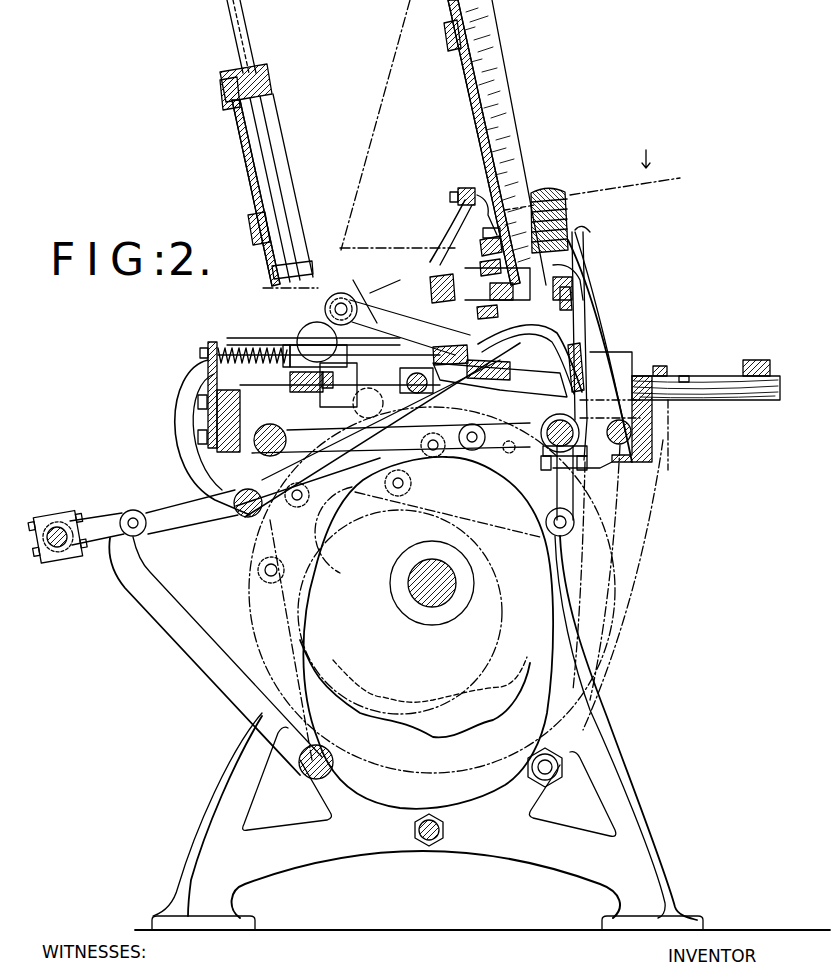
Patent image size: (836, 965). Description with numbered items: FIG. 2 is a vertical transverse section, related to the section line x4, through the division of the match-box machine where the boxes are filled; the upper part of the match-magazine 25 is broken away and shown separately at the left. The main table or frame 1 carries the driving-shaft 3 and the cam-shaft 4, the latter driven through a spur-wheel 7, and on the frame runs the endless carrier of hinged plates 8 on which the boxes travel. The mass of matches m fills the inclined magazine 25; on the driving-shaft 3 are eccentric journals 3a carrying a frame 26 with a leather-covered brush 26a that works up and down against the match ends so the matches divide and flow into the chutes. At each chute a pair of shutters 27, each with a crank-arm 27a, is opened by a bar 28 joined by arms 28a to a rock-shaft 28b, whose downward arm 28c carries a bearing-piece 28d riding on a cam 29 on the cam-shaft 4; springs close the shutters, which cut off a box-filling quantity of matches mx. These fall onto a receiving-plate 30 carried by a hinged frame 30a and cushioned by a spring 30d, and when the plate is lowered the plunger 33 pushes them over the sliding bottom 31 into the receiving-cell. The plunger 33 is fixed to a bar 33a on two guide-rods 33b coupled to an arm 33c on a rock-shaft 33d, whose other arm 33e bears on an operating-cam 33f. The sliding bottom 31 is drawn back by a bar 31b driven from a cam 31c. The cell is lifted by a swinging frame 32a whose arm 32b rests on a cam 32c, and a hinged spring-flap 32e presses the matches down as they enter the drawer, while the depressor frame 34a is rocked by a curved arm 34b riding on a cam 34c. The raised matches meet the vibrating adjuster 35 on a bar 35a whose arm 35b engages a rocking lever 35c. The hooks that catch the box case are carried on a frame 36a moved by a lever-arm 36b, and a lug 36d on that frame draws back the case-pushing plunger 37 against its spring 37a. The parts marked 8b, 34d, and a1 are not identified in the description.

The main frame 1 is at (188, 418).
The driving-shaft 3 is at (592, 470).
The eccentrically-turned journals 3a is at (655, 426).
The cam-shaft 4 is at (456, 567).
The spur-wheel 7 is at (606, 666).
The carrier plates 8 is at (722, 375).
The table stop 8b is at (684, 382).
The match-magazine 25 is at (248, 176).
The brush frame 26 is at (612, 320).
The leather-covered brush 26a is at (575, 215).
The shutters 27 is at (583, 262).
The crank-arm 27a is at (490, 258).
The shutter-opening bar 28 is at (488, 250).
The arms 28a is at (618, 342).
The rock-shaft 28b is at (655, 455).
The downward arm 28c is at (592, 606).
The bearing-piece 28d is at (545, 748).
The shutter cam 29 is at (438, 700).
The receiving-plate 30 is at (585, 278).
The receiving-plate frame 30a is at (590, 290).
The spring 30d is at (562, 300).
The sliding bottom plate 31 is at (548, 460).
The bar 31b is at (490, 393).
The cam 31c is at (548, 532).
The swinging frame 32a is at (280, 400).
The arm 32b is at (284, 442).
The cell operating-cam 32c is at (333, 528).
The hinged spring-flap 32e is at (490, 328).
The plunger 33 is at (520, 322).
The plunger bar 33a is at (598, 356).
The guide-rods 33b is at (172, 496).
The arm 33c is at (176, 634).
The rock-shaft 33d is at (305, 778).
The arm 33e is at (262, 634).
The plunger operating-cam 33f is at (292, 556).
The depressor frame 34a is at (438, 280).
The curved arm 34b is at (418, 392).
The depressor cam 34c is at (490, 480).
The block 34d is at (362, 392).
The shaker or adjuster 35 is at (500, 296).
The adjuster bar 35a is at (468, 188).
The arm 35b is at (475, 280).
The rocking lever 35c is at (362, 378).
The hook frame 36a is at (300, 337).
The lever-arm 36b is at (185, 400).
The lug 36d is at (355, 320).
The case plunger 37 is at (348, 296).
The plunger spring 37a is at (253, 347).
The pin a1 is at (550, 422).
The mass of matches m is at (519, 188).
The cut-off quantity of matches mx is at (512, 350).
The section line x4 is at (352, 244).